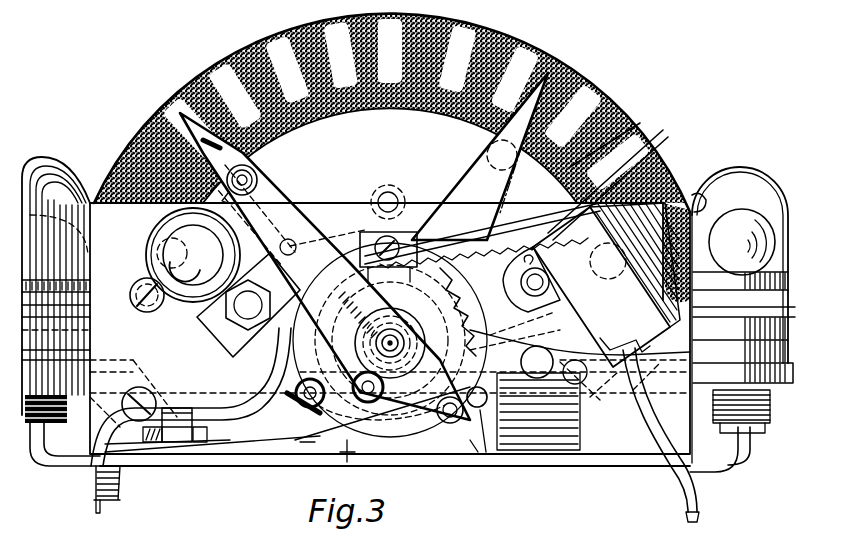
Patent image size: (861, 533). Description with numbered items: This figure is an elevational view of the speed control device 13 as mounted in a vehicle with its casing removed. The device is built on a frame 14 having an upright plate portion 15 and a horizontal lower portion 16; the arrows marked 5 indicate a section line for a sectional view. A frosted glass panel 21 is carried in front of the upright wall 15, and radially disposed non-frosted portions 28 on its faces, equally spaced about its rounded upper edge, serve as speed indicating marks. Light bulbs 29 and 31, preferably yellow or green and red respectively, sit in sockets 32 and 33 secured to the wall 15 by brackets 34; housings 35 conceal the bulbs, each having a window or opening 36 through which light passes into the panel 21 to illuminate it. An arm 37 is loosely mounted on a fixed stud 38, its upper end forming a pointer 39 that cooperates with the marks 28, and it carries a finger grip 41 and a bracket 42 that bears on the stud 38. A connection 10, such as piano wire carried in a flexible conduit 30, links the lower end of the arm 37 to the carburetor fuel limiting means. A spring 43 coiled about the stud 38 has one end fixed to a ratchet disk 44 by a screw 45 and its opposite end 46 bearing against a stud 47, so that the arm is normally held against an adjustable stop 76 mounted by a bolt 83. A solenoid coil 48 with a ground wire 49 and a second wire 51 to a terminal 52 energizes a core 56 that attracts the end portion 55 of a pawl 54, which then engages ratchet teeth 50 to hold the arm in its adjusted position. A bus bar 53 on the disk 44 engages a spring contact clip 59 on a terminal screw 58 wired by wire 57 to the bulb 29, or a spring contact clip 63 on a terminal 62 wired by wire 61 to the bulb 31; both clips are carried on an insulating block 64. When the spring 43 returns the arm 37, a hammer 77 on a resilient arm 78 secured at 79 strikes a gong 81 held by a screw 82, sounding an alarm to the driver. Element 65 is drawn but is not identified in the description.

The section line 5- 5 is at (372, 9).
The connection 10 is at (112, 500).
The speed control device 13 is at (607, 80).
The frame 14 is at (255, 462).
The upright plate portion 15 is at (610, 135).
The horizontal lower portion 16 is at (525, 462).
The panel 21 is at (128, 122).
The non-frosted portions 28 is at (222, 63).
The light bulb 29 is at (86, 250).
The flexible conduit 30 is at (122, 490).
The light bulb 31 is at (740, 212).
The socket 32 is at (84, 333).
The socket 33 is at (747, 333).
The brackets 34 is at (80, 395).
The housings 35 is at (33, 162).
The window or opening 36 is at (701, 193).
The arm 37 is at (287, 197).
The fixed shaft or stud 38 is at (446, 312).
The pointer 39 is at (181, 110).
The finger grip 41 is at (258, 170).
The bracket 42 is at (446, 292).
The spring 43 is at (382, 410).
The ratchet disk 44 is at (313, 399).
The screw 45 is at (370, 404).
The spring end 46 is at (535, 369).
The stud 47 is at (572, 384).
The solenoid coil 48 is at (622, 255).
The wire 49 is at (684, 500).
The ratchet teeth 50 is at (458, 244).
The wire 51 is at (474, 243).
The terminal 52 is at (402, 208).
The bus bar 53 is at (416, 258).
The pawl 54 is at (495, 326).
The end portion 55 is at (553, 228).
The core 56 is at (630, 170).
The wire 57 is at (40, 470).
The terminal screw 58 is at (308, 448).
The spring contact clip 59 is at (310, 392).
The wire 61 is at (758, 466).
The terminal 62 is at (478, 425).
The spring contact clip 63 is at (440, 420).
The insulating block 64 is at (352, 456).
The cable loop 65 is at (268, 383).
The stop 76 is at (270, 258).
The hammer 77 is at (224, 200).
The resilient arm 78 is at (327, 225).
The attachment point 79 is at (314, 238).
The gong 81 is at (162, 240).
The screw 82 is at (139, 285).
The bolt 83 is at (225, 312).